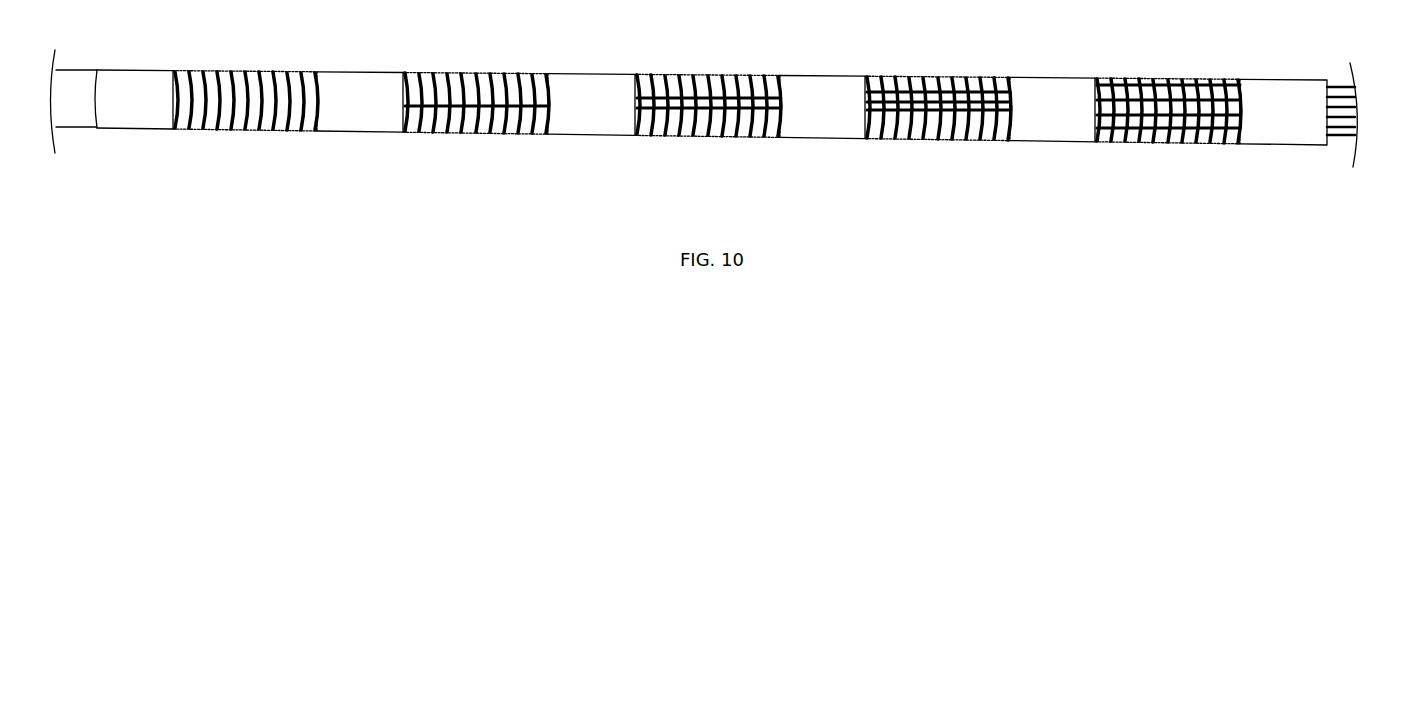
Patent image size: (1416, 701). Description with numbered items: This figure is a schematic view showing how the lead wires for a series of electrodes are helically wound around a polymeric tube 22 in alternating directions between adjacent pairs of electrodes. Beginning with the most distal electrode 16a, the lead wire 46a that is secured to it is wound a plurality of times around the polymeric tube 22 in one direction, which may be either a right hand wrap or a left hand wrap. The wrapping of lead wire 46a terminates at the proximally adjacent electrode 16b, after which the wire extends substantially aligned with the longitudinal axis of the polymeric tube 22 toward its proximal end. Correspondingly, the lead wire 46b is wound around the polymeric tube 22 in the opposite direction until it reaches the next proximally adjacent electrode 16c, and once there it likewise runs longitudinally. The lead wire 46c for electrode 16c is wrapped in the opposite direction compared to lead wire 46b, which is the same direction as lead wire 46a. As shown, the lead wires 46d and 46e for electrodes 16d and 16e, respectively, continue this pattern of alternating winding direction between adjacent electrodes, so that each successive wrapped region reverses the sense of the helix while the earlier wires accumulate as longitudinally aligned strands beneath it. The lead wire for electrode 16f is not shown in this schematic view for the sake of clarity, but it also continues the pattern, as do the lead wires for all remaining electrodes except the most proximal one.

The polymeric tube 22 is at (62, 125).
The electrode 16a is at (137, 67).
The electrode 16b is at (365, 68).
The electrode 16c is at (600, 72).
The electrode 16d is at (822, 75).
The electrode 16e is at (1055, 75).
The electrode 16f is at (1278, 78).
The lead wire 46a is at (240, 73).
The lead wire 46b is at (480, 75).
The lead wire 46c is at (697, 75).
The lead wire 46d is at (937, 78).
The lead wire 46e is at (1163, 80).